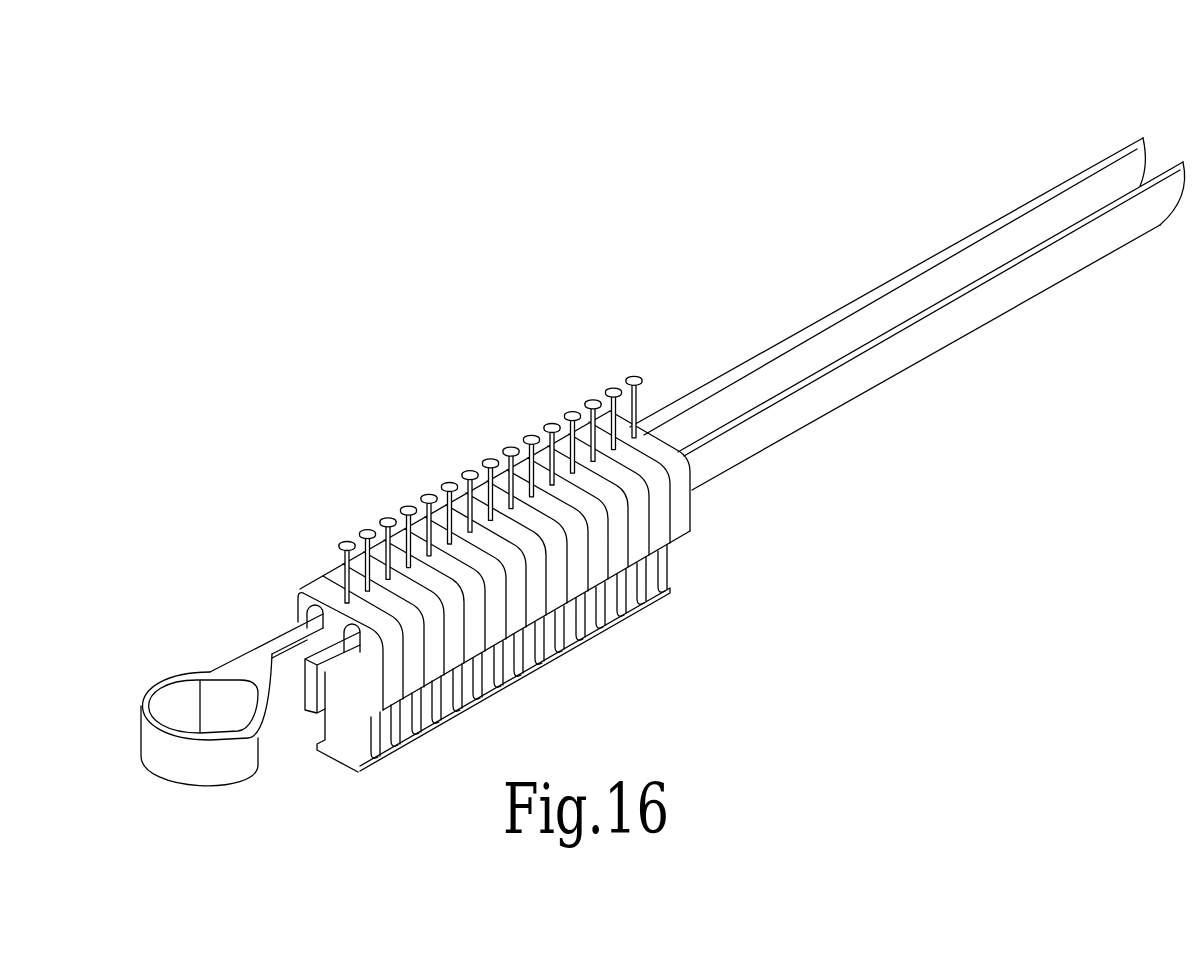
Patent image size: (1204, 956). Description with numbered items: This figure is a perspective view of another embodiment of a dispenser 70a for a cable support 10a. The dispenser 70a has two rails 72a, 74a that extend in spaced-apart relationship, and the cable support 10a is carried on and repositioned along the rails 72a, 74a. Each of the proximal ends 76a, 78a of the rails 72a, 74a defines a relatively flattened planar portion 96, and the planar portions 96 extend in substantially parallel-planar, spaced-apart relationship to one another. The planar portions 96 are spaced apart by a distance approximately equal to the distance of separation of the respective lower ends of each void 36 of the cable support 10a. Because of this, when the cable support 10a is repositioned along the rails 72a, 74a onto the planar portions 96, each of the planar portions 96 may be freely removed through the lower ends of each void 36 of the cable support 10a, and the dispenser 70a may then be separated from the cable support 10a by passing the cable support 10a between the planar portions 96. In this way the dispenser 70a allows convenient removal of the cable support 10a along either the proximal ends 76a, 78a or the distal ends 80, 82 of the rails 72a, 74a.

The cable support 10a is at (448, 482).
The void 36 is at (364, 684).
The dispenser 70a is at (889, 321).
The rail 72a is at (863, 246).
The rail 74a is at (937, 373).
The proximal end 76a is at (258, 613).
The proximal end 78a is at (305, 724).
The distal end 80 is at (1082, 140).
The distal end 82 is at (1148, 243).
The planar portion 96 is at (273, 680).